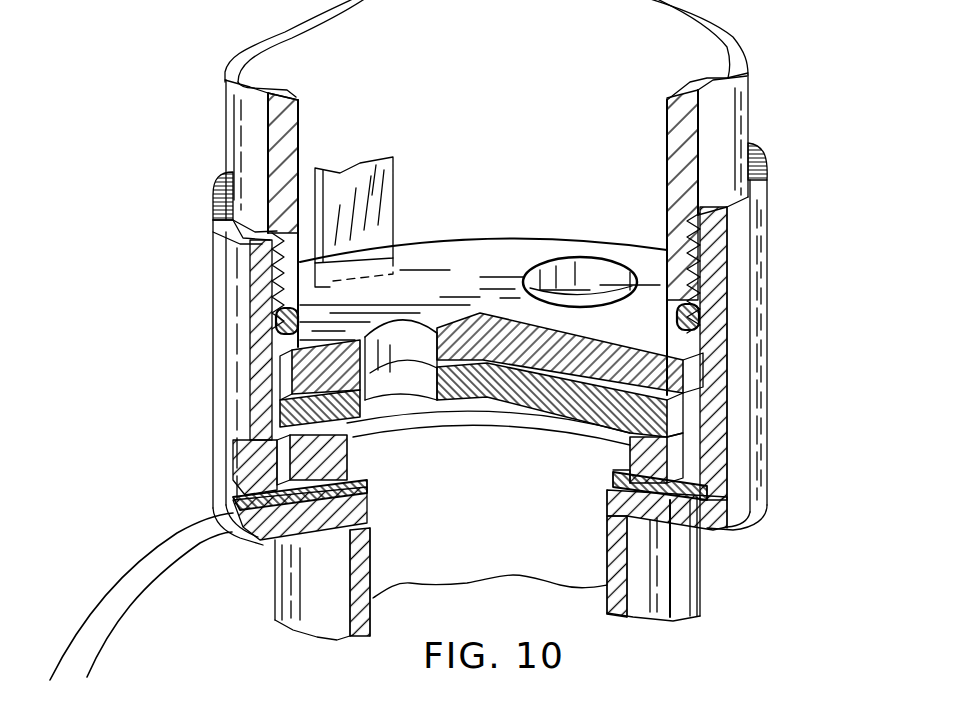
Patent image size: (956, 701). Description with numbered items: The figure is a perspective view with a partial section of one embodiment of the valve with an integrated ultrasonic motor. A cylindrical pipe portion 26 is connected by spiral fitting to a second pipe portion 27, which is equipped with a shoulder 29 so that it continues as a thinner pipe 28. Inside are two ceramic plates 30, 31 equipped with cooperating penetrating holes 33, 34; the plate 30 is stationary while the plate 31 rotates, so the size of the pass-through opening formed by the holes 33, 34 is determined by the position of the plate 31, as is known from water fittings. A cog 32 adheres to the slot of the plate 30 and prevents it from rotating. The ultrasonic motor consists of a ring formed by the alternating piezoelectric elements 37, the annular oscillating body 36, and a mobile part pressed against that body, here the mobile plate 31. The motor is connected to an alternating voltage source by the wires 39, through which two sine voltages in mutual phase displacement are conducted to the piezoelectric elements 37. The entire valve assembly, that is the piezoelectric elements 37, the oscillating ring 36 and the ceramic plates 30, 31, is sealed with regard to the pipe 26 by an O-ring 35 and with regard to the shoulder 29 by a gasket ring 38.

The cylindrical pipe portion 26 is at (727, 140).
The second pipe portion 27 is at (750, 380).
The thinner pipe 28 is at (665, 600).
The shoulder 29 is at (657, 517).
The ceramic plate 30 is at (513, 240).
The ceramic plate 31 is at (553, 400).
The cog 32 is at (368, 193).
The penetrating hole 33 is at (410, 333).
The penetrating hole 34 is at (445, 393).
The O-ring 35 is at (700, 310).
The annular oscillating body 36 is at (645, 456).
The piezoelectric elements 37 is at (360, 473).
The gasket ring 38 is at (263, 547).
The wires 39 is at (122, 583).